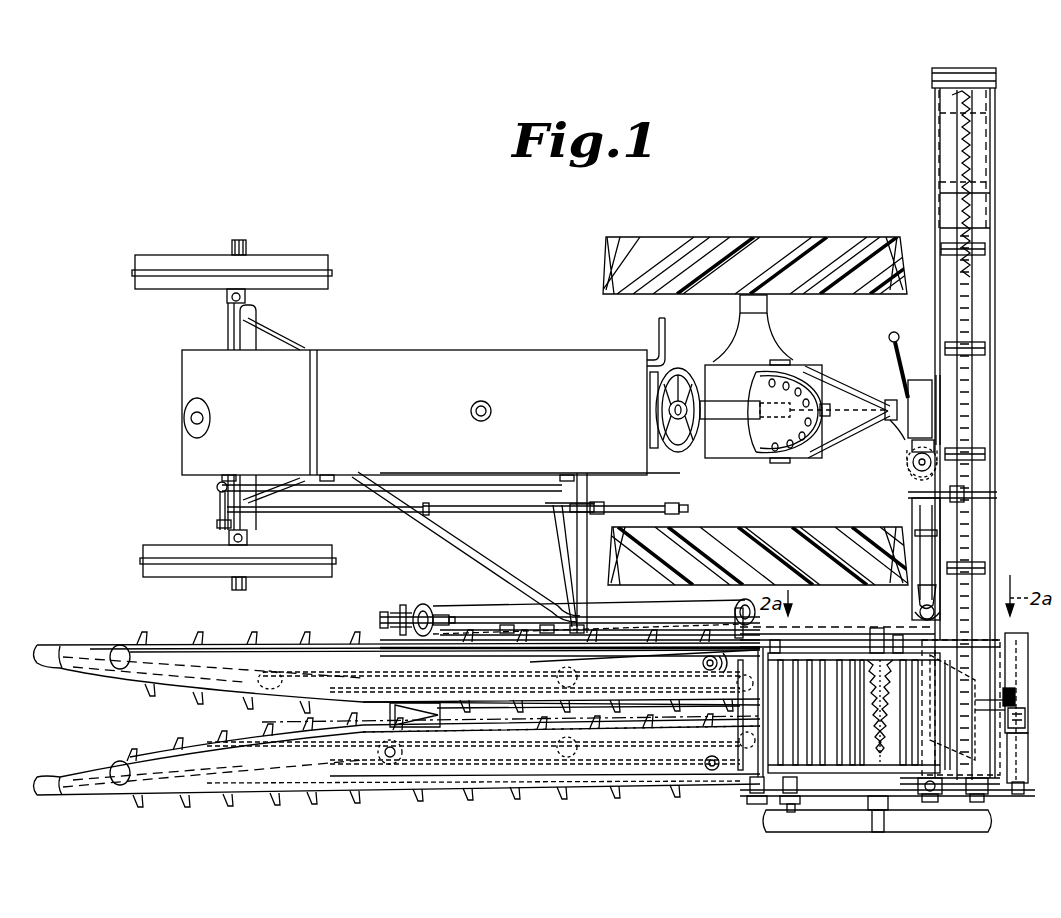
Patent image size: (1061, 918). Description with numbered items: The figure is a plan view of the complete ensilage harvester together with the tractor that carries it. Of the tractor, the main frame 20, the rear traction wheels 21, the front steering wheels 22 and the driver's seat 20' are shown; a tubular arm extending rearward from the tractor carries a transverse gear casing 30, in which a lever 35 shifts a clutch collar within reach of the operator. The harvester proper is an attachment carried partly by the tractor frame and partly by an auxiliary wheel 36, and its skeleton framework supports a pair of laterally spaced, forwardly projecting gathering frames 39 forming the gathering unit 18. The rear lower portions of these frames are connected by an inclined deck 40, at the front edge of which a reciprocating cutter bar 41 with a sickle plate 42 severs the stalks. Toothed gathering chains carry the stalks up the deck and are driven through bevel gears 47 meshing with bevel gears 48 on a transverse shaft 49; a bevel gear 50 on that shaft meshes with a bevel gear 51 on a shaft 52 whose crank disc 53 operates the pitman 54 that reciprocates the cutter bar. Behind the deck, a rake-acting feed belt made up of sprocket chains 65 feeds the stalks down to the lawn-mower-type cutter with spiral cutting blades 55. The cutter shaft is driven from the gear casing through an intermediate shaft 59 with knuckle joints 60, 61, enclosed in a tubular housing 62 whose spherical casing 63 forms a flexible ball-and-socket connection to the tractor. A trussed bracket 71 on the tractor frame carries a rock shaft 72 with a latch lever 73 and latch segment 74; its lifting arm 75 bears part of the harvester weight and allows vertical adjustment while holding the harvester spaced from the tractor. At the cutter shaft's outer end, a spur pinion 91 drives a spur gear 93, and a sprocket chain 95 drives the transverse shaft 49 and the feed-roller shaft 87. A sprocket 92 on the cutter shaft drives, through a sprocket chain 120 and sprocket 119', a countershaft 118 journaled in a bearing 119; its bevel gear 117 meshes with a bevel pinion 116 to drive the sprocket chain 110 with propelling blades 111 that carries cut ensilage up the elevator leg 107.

The gathering unit 18 is at (250, 716).
The tractor main frame 20 is at (720, 389).
The driver's seat 20' is at (837, 449).
The rear traction wheels 21 is at (828, 285).
The front steering wheels 22 is at (318, 262).
The gear casing 30 is at (920, 426).
The lever 35 is at (900, 372).
The auxiliary wheel 36 is at (833, 817).
The gathering frames 39 is at (277, 672).
The inclined deck 40 is at (510, 725).
The reciprocating cutter bar 41 is at (392, 764).
The sickle plate 42 is at (377, 714).
The bevel gears 47 is at (738, 764).
The bevel gears 48 is at (750, 655).
The transverse shaft 49 is at (757, 803).
The bevel gear 50 is at (723, 614).
The bevel gear 51 is at (738, 598).
The shaft 52 is at (468, 618).
The crank disc 53 is at (422, 604).
The pitman 54 is at (400, 623).
The spiral cutting blades 55 is at (950, 687).
The intermediate shaft 59 is at (930, 512).
The knuckle joint 60 is at (943, 603).
The knuckle joint 61 is at (944, 452).
The tubular housing 62 is at (908, 505).
The spherical casing 63 is at (907, 470).
The sprocket chains 65 is at (827, 663).
The trussed bracket 71 is at (438, 535).
The rock shaft 72 is at (580, 563).
The latch lever 73 is at (635, 504).
The latch segment 74 is at (563, 513).
The lifting arm 75 is at (535, 630).
The shaft 87 is at (795, 806).
The spur pinion 91 is at (943, 777).
The sprocket 92 is at (934, 800).
The spur gear 93 is at (868, 790).
The sprocket chain 95 is at (743, 797).
The elevator leg 107 is at (1000, 292).
The sprocket chain 110 is at (967, 312).
The propelling blades 111 is at (950, 253).
The bevel pinion 116 is at (1015, 697).
The bevel gear 117 is at (1026, 720).
The countershaft 118 is at (983, 712).
The bearing 119 is at (1033, 708).
The sprocket 119' is at (1023, 818).
The sprocket chain 120 is at (967, 803).